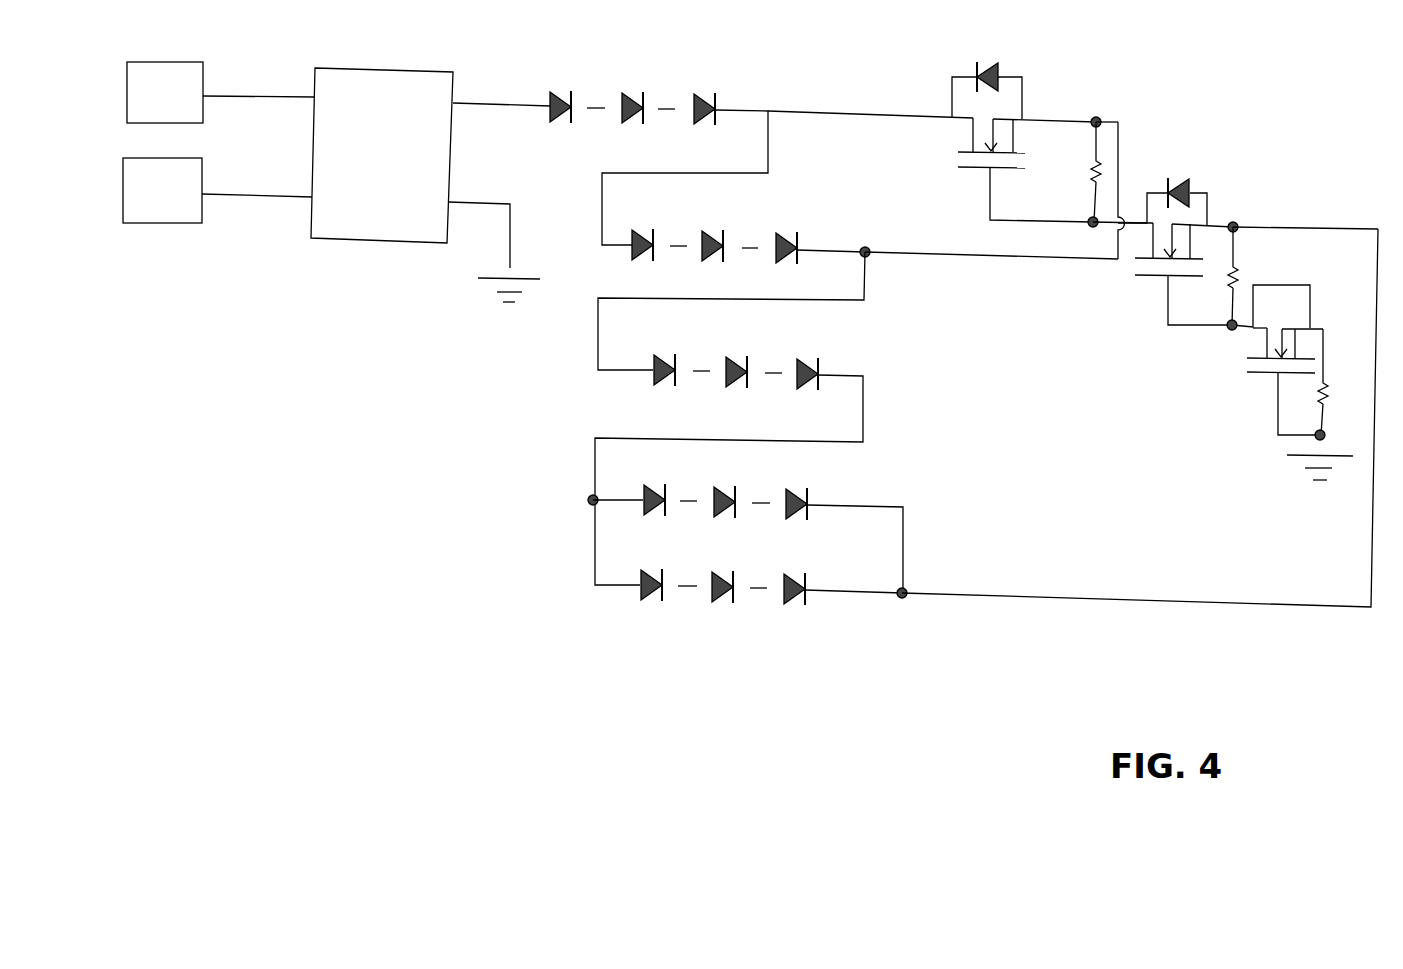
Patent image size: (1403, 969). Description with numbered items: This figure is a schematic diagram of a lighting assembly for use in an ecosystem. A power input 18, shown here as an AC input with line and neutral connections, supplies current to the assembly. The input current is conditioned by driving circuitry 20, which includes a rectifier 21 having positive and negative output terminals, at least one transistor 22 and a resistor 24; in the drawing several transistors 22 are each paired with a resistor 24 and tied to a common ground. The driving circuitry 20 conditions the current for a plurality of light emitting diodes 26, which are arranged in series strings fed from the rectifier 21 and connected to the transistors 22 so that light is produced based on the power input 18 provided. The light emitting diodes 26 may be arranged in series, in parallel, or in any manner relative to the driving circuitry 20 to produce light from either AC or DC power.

The power input 18 is at (117, 100).
The driving circuitry 20 is at (1106, 84).
The rectifier 21 is at (365, 68).
The transistor 22 is at (1017, 77).
The resistor 24 is at (1100, 172).
The light emitting diodes 26 is at (655, 24).